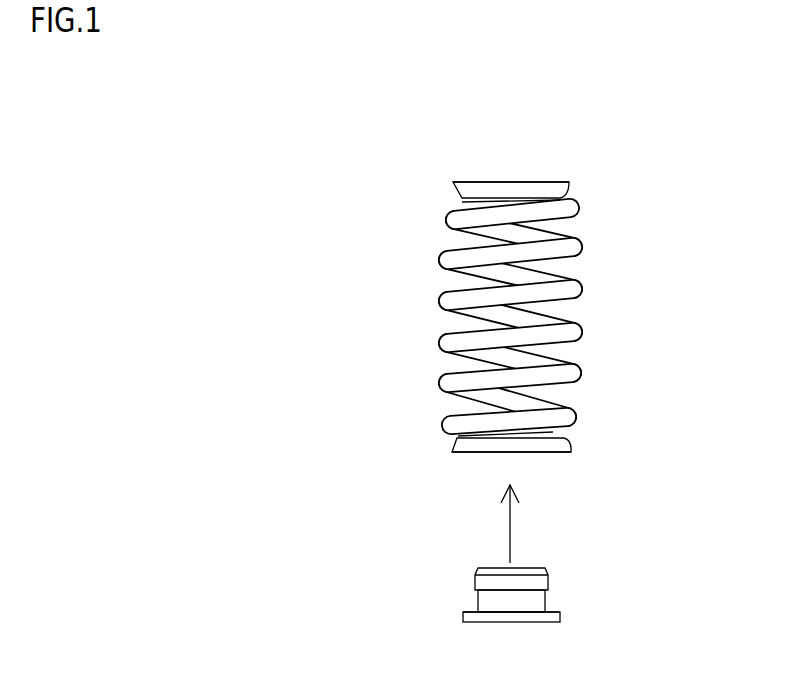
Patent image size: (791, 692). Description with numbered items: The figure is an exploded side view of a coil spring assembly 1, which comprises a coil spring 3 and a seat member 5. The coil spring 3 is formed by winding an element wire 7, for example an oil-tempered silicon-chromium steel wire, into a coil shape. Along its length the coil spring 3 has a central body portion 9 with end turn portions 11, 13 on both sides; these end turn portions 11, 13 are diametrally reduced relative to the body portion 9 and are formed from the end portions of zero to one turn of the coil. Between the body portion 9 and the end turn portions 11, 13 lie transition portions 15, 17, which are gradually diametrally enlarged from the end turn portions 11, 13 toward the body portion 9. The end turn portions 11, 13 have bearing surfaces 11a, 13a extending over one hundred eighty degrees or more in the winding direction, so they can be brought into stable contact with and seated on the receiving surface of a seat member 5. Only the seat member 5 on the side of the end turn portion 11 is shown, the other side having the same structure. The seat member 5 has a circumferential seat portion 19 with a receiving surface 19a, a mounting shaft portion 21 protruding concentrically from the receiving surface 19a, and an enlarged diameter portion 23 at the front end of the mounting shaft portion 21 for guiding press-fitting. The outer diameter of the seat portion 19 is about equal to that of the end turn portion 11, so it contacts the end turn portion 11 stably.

The coil spring assembly 1 is at (523, 312).
The coil spring 3 is at (529, 318).
The seat member 5 is at (528, 594).
The element wire 7 is at (514, 315).
The body portion 9 is at (456, 334).
The end turn portion 11 is at (549, 476).
The bearing surface 11a is at (452, 455).
The end turn portion 13 is at (457, 154).
The bearing surface 13a is at (470, 182).
The transition portion 15 is at (547, 420).
The transition portion 17 is at (553, 215).
The seat portion 19 is at (472, 614).
The receiving surface 19a is at (470, 610).
The mounting shaft portion 21 is at (538, 598).
The enlarged diameter portion 23 is at (490, 573).